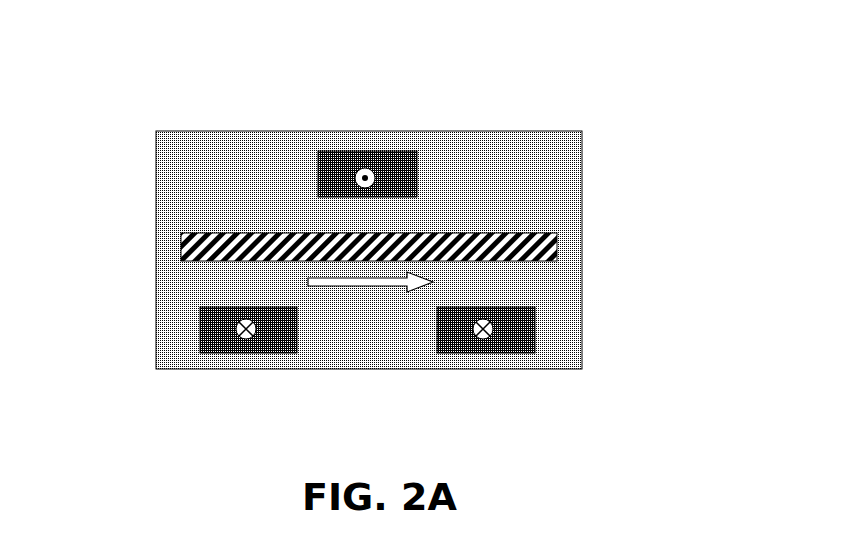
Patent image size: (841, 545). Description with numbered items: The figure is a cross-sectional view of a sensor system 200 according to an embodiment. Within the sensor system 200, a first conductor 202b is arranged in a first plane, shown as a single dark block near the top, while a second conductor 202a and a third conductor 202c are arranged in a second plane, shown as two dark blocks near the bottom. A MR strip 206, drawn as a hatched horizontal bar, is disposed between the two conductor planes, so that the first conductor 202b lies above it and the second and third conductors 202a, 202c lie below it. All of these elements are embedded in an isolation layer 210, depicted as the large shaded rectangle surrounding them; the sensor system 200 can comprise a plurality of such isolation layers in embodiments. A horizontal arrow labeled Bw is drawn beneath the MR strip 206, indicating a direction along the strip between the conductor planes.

The sensor system 200 is at (652, 100).
The isolation layer 210 is at (565, 288).
The MR strip 206 is at (186, 244).
The second conductor 202a is at (220, 343).
The first conductor 202b is at (322, 155).
The third conductor 202c is at (513, 348).
The flow direction width Bw is at (368, 283).